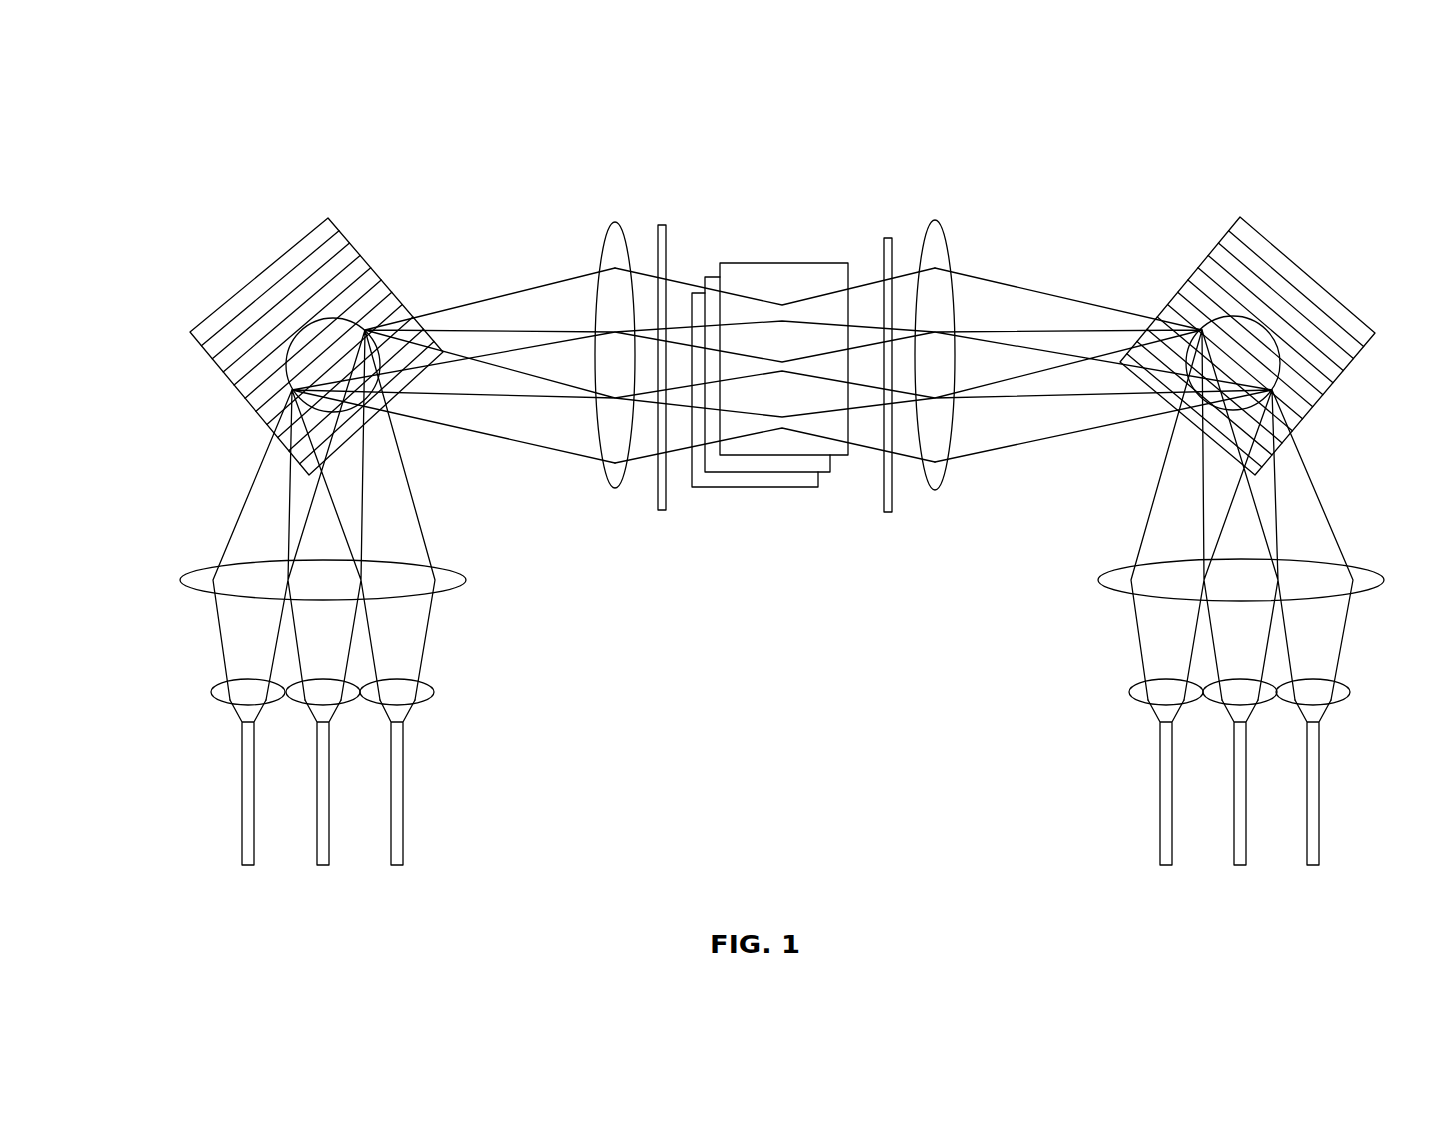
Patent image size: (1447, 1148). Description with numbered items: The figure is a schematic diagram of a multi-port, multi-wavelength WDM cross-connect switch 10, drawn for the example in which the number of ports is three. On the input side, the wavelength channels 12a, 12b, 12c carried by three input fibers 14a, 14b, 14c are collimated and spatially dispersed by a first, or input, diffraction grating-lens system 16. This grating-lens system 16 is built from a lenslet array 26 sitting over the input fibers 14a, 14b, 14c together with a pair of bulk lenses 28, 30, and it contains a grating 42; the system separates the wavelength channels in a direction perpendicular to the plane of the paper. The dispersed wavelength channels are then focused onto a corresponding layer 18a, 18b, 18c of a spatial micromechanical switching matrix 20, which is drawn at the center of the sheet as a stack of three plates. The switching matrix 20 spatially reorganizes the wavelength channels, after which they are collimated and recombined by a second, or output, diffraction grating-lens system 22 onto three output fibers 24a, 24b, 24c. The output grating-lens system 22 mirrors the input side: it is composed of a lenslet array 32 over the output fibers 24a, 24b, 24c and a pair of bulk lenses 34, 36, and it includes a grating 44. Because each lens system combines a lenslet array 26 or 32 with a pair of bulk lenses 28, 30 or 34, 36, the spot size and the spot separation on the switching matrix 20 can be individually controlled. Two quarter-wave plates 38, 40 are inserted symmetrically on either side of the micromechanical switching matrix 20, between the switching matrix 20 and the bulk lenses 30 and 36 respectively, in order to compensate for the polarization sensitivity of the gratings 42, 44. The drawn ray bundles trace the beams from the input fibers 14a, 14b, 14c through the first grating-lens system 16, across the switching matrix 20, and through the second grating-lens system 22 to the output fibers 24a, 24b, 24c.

The WDM cross-connect switch 10 is at (1058, 170).
The wavelength channel 12a is at (190, 672).
The wavelength channel 12b is at (333, 648).
The wavelength channel 12c is at (454, 666).
The input fiber 14a is at (244, 866).
The input fiber 14b is at (319, 867).
The input fiber 14c is at (396, 867).
The first diffraction grating-lens system 16 is at (210, 260).
The layer of spatial micromechanical switching matrix 18a is at (775, 487).
The layer of spatial micromechanical switching matrix 18b is at (830, 458).
The layer of spatial micromechanical switching matrix 18c is at (848, 455).
The spatial micromechanical switching matrix 20 is at (755, 263).
The second diffraction grating-lens system 22 is at (1335, 252).
The output fiber 24a is at (1164, 867).
The output fiber 24b is at (1240, 867).
The output fiber 24c is at (1313, 867).
The lenslet array 26 is at (208, 723).
The bulk lens 28 is at (195, 570).
The bulk lens 30 is at (602, 247).
The lenslet array 32 is at (1123, 713).
The bulk lens 34 is at (1362, 568).
The bulk lens 36 is at (947, 240).
The quarter-wave plate 38 is at (667, 260).
The quarter-wave plate 40 is at (893, 250).
The grating 42 is at (299, 240).
The grating 44 is at (1263, 233).